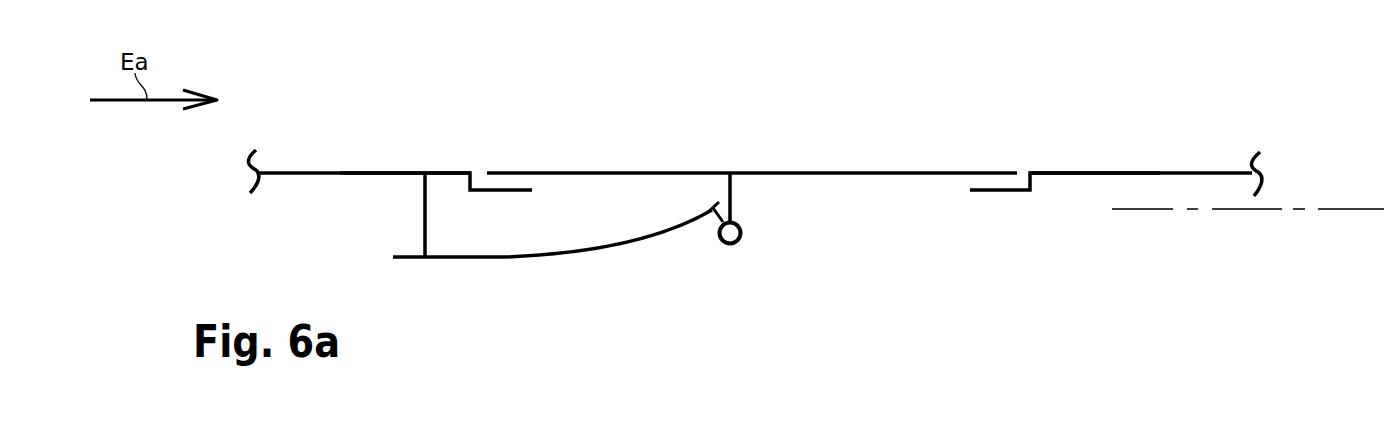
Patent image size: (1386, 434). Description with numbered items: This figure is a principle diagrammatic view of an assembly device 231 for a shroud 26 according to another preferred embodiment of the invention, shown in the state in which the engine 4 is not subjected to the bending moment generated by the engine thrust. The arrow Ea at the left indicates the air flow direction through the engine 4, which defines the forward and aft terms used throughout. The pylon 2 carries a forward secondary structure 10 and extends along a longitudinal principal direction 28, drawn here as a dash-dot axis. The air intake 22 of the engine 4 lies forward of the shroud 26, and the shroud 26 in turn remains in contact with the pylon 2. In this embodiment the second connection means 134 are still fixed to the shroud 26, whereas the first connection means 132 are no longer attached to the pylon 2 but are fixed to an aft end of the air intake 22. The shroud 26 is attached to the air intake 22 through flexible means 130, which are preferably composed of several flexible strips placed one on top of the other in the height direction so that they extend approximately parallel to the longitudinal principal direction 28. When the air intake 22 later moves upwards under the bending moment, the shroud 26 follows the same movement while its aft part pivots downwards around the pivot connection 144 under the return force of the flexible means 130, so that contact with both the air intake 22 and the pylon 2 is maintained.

The pylon 2 is at (1147, 173).
The engine 4 is at (303, 173).
The forward secondary structure 10 is at (1067, 173).
The air intake 22 is at (360, 173).
The shroud 26 is at (626, 173).
The longitudinal principal direction 28 is at (1338, 209).
The flexible means 130 is at (643, 243).
The first connection means 132 is at (422, 210).
The second connection means 134 is at (733, 197).
The pivot connection 144 is at (740, 245).
The assembly device 231 is at (499, 277).